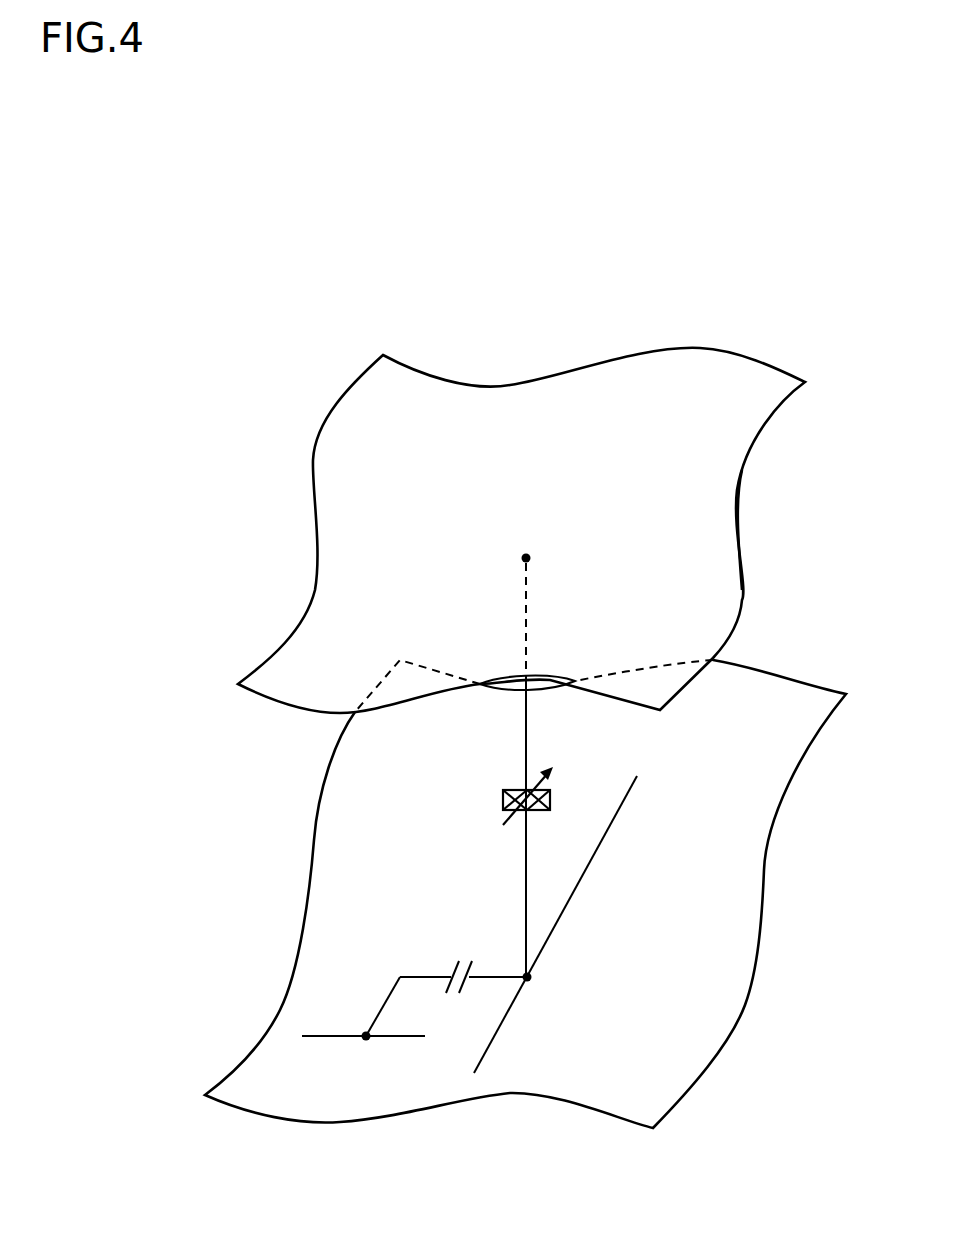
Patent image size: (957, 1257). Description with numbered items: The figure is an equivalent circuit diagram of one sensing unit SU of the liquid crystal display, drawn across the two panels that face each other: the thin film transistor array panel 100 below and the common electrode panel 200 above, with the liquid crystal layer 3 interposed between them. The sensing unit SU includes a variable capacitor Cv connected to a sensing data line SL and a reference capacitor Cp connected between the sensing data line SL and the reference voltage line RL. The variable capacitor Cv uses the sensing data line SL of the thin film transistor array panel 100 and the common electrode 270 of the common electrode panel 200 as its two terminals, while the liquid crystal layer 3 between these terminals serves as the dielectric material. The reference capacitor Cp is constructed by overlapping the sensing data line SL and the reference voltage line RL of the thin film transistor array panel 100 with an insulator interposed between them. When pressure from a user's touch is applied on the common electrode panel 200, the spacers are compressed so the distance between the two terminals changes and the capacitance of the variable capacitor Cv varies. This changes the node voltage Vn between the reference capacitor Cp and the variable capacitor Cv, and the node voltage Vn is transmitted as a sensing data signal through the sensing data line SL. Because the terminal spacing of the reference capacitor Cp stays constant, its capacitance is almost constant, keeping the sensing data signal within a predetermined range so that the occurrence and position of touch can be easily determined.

The thin film transistor array panel 100 is at (776, 873).
The common electrode panel 200 is at (752, 557).
The common electrode 270 is at (737, 503).
The liquid crystal layer 3 is at (226, 790).
The sensing unit SU is at (406, 302).
The sensing data line SL is at (567, 907).
The reference voltage line RL is at (357, 1022).
The variable capacitor Cv is at (509, 796).
The reference capacitor Cp is at (446, 986).
The node voltage Vn is at (549, 982).